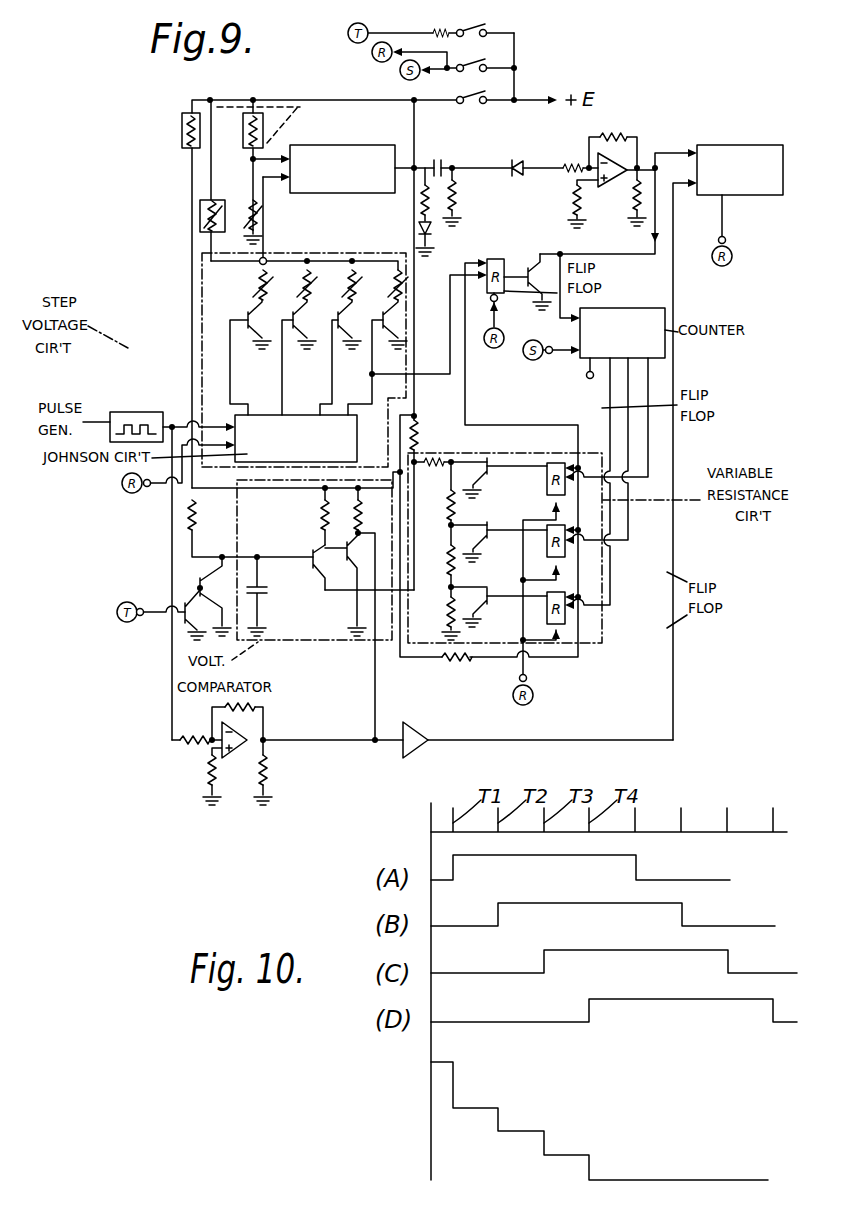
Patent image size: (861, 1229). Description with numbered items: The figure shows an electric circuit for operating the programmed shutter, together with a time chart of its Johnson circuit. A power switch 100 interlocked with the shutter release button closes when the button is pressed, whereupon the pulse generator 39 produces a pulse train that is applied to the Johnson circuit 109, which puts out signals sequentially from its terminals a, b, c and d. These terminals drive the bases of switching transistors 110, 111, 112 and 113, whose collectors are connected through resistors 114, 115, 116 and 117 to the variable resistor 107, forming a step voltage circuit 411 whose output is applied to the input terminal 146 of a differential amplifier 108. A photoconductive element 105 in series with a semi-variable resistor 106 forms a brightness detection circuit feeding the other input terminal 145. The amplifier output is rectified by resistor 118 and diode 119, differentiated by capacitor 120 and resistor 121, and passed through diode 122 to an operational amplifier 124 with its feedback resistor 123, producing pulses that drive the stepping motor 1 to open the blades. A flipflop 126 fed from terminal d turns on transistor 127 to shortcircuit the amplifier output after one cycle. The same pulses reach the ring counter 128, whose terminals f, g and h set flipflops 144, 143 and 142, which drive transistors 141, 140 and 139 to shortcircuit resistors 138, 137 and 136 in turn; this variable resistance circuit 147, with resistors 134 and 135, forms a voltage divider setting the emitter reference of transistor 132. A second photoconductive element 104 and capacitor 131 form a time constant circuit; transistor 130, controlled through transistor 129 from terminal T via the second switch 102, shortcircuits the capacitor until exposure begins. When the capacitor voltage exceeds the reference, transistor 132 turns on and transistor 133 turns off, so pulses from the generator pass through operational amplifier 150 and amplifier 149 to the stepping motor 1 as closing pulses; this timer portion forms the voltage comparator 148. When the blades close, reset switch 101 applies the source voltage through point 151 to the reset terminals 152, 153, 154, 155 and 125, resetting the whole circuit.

In FIG. 9, the stepping motor 1 is at (757, 145).
In FIG. 9, the pulse generator 39 is at (155, 412).
In FIG. 10, the pulse generator 39 is at (576, 827).
In FIG. 9, the power switch 100 is at (489, 102).
In FIG. 9, the reset switch 101 is at (490, 60).
In FIG. 9, the second switch 102 is at (490, 27).
In FIG. 9, the second photoconductive element 104 is at (182, 128).
In FIG. 9, the photoconductive element 105 is at (262, 128).
In FIG. 9, the semi-variable resistor 106 is at (246, 215).
In FIG. 9, the variable resistor 107 is at (200, 214).
In FIG. 9, the differential amplifier 108 is at (388, 117).
In FIG. 9, the Johnson circuit 109 is at (272, 450).
In FIG. 9, the switching transistor 110 is at (258, 340).
In FIG. 9, the switching transistor 111 is at (303, 340).
In FIG. 9, the switching transistor 112 is at (348, 340).
In FIG. 9, the switching transistor 113 is at (392, 372).
In FIG. 9, the resistor 114 is at (262, 272).
In FIG. 9, the resistor 115 is at (307, 285).
In FIG. 9, the resistor 116 is at (352, 290).
In FIG. 9, the resistor 117 is at (400, 290).
In FIG. 9, the resistor 118 is at (418, 205).
In FIG. 9, the diode 119 is at (418, 237).
In FIG. 9, the capacitor 120 is at (437, 159).
In FIG. 9, the resistor 121 is at (458, 190).
In FIG. 9, the diode 122 is at (517, 160).
In FIG. 9, the operational amplifier 123 is at (624, 137).
In FIG. 9, the operational amplifier 124 is at (612, 190).
In FIG. 9, the reset terminal 125 is at (546, 362).
In FIG. 9, the JK-type flipflop circuit 126 is at (490, 258).
In FIG. 9, the switching transistor 127 is at (533, 266).
In FIG. 9, the ring counter 128 is at (666, 308).
In FIG. 9, the transistor 129 is at (186, 623).
In FIG. 9, the transistor 130 is at (198, 577).
In FIG. 9, the capacitor 131 is at (264, 590).
In FIG. 9, the transistor 132 is at (317, 546).
In FIG. 9, the transistor 133 is at (346, 565).
In FIG. 9, the resistor 134 is at (422, 422).
In FIG. 9, the resistor 135 is at (440, 455).
In FIG. 9, the resistor 136 is at (458, 502).
In FIG. 9, the resistor 137 is at (447, 572).
In FIG. 9, the resistor 138 is at (443, 655).
In FIG. 9, the switching transistor 139 is at (482, 478).
In FIG. 9, the switching transistor 140 is at (470, 548).
In FIG. 9, the switching transistor 141 is at (470, 610).
In FIG. 9, the JK type flipflop circuit 142 is at (562, 462).
In FIG. 9, the JK type flipflop circuit 143 is at (582, 523).
In FIG. 9, the JK type flipflop circuit 144 is at (580, 620).
In FIG. 9, the input terminal 145 is at (268, 157).
In FIG. 9, the input terminal 146 is at (270, 182).
In FIG. 10, the input terminal 146 is at (563, 1121).
In FIG. 9, the variable resistance circuit 147 is at (487, 452).
In FIG. 9, the voltage comparator 148 is at (290, 650).
In FIG. 9, the amplifier 149 is at (412, 758).
In FIG. 9, the operational amplifier 150 is at (233, 755).
In FIG. 9, the point 151 is at (440, 74).
In FIG. 9, the reset terminal 152 is at (134, 494).
In FIG. 9, the reset terminal 153 is at (523, 706).
In FIG. 9, the reset terminal 154 is at (733, 258).
In FIG. 9, the reset terminal 155 is at (499, 338).
In FIG. 9, the step voltage circuit 411 is at (200, 352).